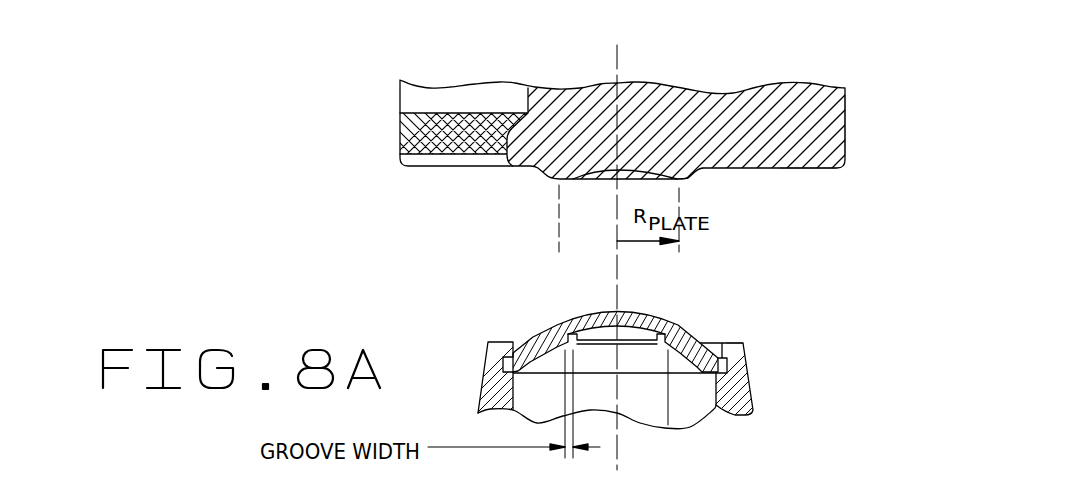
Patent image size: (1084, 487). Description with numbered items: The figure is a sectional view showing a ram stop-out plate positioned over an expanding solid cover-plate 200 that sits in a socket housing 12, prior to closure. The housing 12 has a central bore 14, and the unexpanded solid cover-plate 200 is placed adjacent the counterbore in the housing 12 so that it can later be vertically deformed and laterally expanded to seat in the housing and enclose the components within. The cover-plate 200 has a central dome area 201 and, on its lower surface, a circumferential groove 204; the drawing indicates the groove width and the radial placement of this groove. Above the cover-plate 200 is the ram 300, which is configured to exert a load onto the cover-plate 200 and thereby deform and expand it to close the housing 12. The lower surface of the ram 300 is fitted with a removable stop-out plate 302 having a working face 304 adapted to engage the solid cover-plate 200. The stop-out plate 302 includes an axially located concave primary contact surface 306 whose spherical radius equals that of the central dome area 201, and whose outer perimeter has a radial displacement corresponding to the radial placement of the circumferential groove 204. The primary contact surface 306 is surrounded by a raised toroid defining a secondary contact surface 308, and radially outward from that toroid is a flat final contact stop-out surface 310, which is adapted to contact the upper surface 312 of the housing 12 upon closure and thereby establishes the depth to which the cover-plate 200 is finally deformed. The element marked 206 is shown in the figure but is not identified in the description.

The ram 300 is at (745, 67).
The removable stop-out plate 302 is at (845, 131).
The working face 304 is at (388, 153).
The concave primary contact surface 306 is at (603, 178).
The secondary contact surface 308 is at (690, 180).
The final contact stop-out surface 310 is at (820, 170).
The solid cover-plate 200 is at (650, 370).
The central dome area 201 is at (643, 318).
The dome shell 206 is at (688, 337).
The upper surface 312 is at (733, 342).
The socket housing 12 is at (750, 378).
The central bore 14 is at (598, 392).
The circumferential groove 204 is at (668, 425).